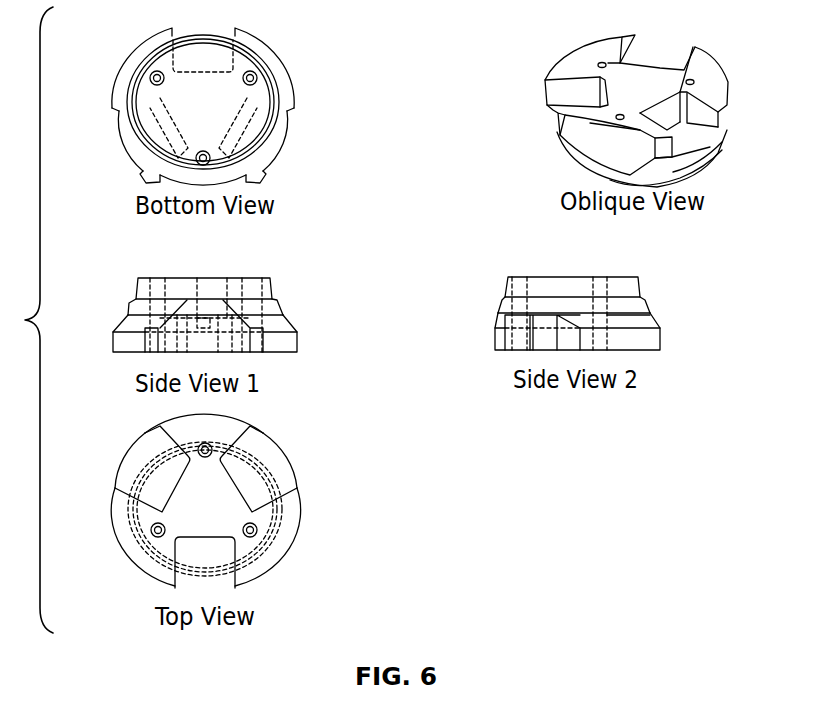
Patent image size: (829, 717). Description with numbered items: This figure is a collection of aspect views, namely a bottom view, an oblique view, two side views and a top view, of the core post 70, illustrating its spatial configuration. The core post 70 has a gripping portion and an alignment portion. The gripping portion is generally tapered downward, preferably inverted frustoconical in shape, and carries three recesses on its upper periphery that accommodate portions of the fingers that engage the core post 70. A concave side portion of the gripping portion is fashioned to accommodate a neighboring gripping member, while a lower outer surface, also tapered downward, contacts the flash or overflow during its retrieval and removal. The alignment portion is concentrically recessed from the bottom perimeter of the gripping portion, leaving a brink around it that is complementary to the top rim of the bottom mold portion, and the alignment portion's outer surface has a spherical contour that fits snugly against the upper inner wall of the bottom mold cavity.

The core post 70 is at (522, 85).